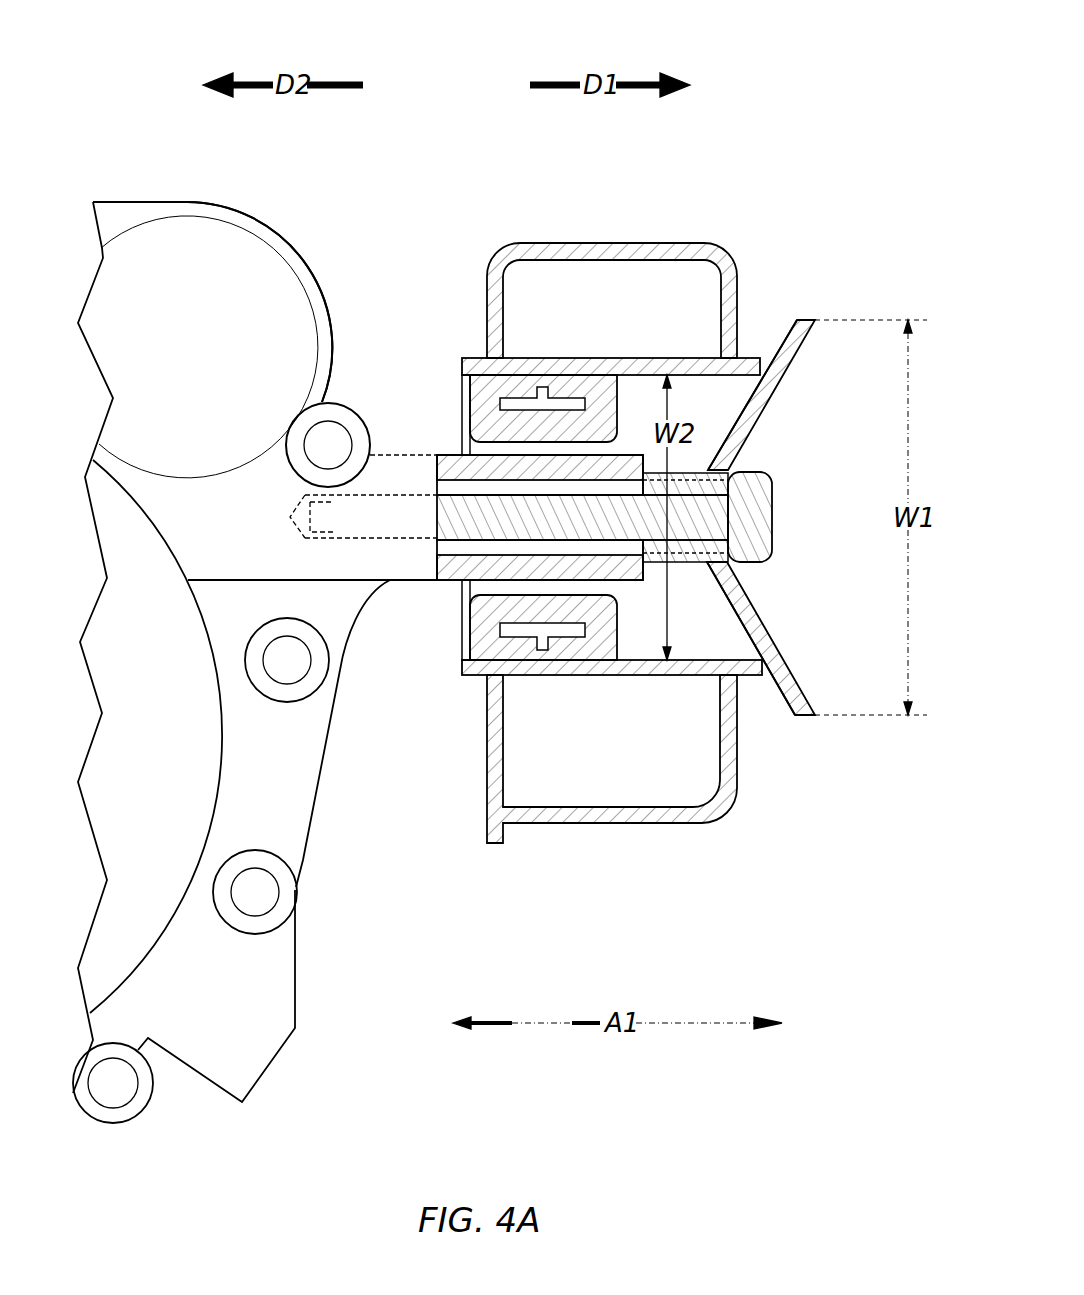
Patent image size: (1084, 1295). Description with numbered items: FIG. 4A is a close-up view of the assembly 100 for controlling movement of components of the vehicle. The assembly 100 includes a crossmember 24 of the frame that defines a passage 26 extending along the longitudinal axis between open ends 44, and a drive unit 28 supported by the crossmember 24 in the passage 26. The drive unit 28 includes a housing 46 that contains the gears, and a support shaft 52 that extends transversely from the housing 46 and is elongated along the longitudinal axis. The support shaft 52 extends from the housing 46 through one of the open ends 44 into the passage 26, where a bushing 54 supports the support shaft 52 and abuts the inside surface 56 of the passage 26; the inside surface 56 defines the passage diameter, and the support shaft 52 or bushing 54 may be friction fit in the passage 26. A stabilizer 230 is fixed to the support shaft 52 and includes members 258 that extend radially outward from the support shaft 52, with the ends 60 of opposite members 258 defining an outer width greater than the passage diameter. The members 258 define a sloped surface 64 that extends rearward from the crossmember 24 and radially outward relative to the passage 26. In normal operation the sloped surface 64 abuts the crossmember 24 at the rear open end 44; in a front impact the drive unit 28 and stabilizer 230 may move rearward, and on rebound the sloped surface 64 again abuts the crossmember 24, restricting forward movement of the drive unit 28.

The assembly 100 is at (852, 35).
The stabilizer 230 is at (806, 573).
The housing 46 is at (165, 250).
The drive unit 28 is at (245, 207).
The crossmember 24 is at (578, 243).
The inside surface 56 is at (693, 658).
The open ends 44 is at (462, 615).
The bushing 54 is at (480, 410).
The support shaft 52 is at (452, 572).
The members 258 is at (787, 373).
The ends 60 is at (800, 318).
The sloped surface 64 is at (740, 412).
The passage 26 is at (630, 645).